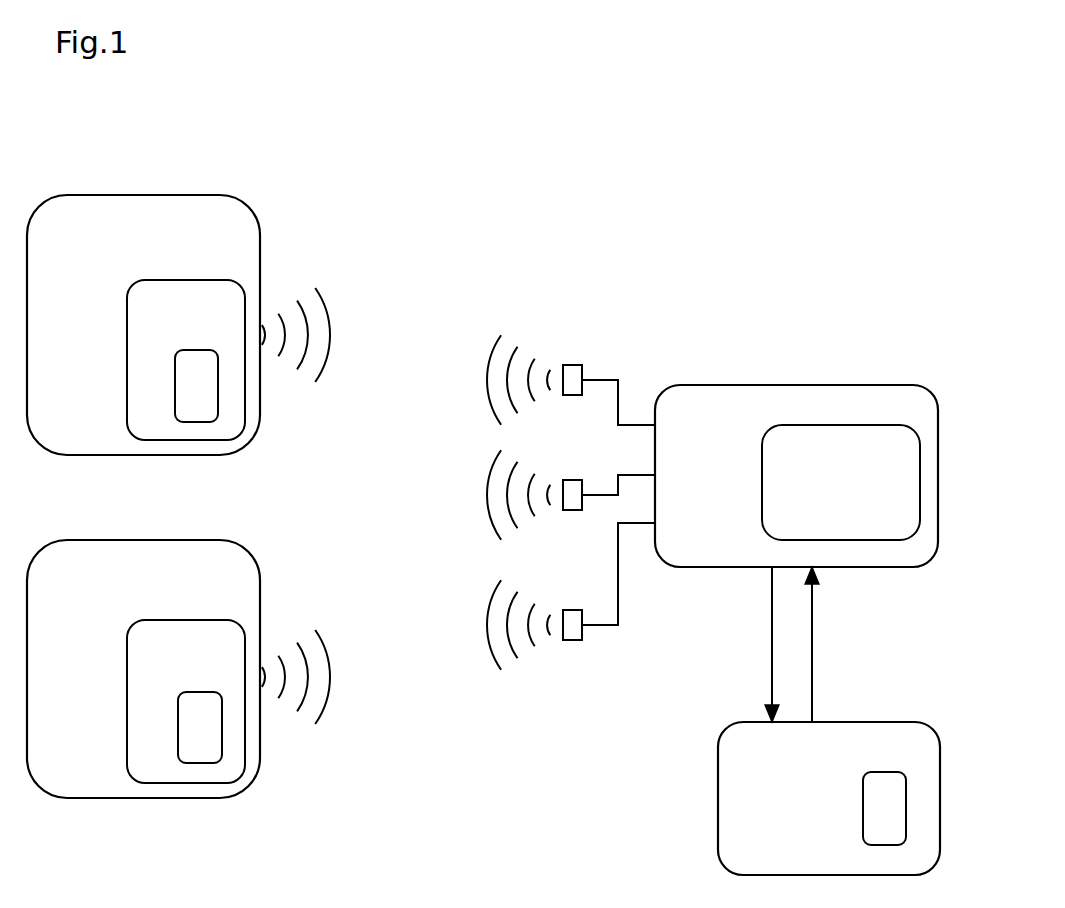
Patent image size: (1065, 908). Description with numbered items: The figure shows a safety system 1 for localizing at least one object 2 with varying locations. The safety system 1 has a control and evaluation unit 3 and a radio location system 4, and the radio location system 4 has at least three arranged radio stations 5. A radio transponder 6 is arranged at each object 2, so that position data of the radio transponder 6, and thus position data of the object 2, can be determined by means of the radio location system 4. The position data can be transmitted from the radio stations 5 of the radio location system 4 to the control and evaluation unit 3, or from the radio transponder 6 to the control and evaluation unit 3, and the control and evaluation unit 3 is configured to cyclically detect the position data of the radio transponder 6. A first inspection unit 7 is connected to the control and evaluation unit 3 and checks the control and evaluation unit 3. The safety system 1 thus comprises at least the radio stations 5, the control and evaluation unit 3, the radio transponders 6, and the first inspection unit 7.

The safety system 1 is at (783, 167).
The object 2 is at (260, 238).
The control and evaluation unit 3 is at (863, 385).
The radio location system 4 is at (373, 315).
The radio station 5 is at (573, 363).
The radio transponder 6 is at (160, 282).
The first inspection unit 7 is at (872, 722).